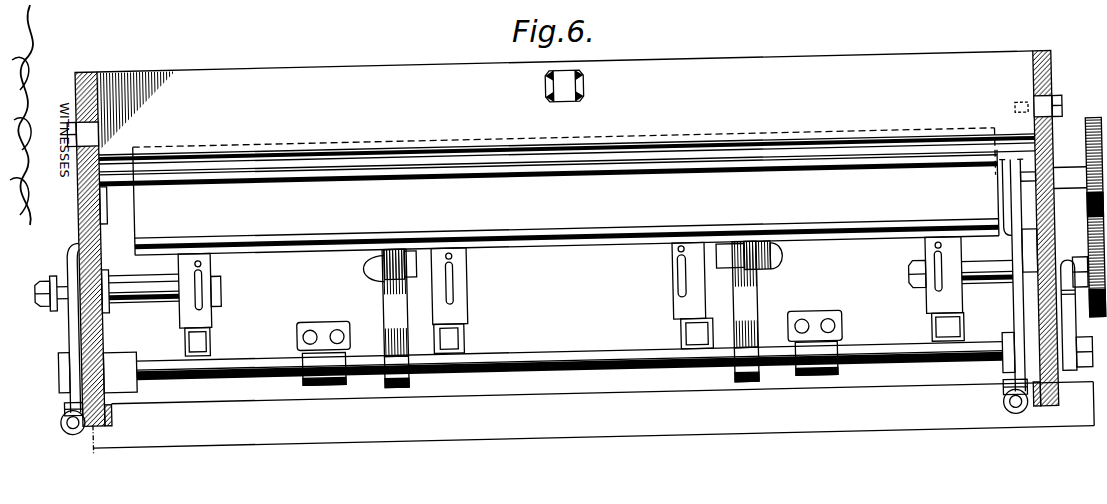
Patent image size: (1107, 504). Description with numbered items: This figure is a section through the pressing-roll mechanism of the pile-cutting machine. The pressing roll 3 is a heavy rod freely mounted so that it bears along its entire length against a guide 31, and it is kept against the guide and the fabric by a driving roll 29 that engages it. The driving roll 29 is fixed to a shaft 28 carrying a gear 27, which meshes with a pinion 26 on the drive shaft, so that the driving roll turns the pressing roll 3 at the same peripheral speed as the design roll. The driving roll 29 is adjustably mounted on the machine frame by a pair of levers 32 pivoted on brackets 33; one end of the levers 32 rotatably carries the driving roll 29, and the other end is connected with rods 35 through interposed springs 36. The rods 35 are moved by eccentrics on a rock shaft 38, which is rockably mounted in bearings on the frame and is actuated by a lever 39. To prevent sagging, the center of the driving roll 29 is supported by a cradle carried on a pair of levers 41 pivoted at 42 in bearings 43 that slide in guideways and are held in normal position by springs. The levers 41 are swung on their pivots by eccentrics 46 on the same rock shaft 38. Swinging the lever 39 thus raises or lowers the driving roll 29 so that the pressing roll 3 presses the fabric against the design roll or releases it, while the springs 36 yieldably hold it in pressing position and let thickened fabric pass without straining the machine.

The pressing roll 3 is at (523, 173).
The pinion 26 is at (1095, 322).
The gear 27 is at (1089, 144).
The shaft 28 is at (1063, 197).
The driving roll 29 is at (549, 192).
The guide 31 is at (566, 123).
The levers 32 is at (66, 331).
The brackets 33 is at (174, 320).
The rods 35 is at (64, 437).
The springs 36 is at (57, 408).
The rock shaft 38 is at (542, 368).
The lever 39 is at (1066, 282).
The levers 41 is at (387, 310).
The pivot 42 is at (354, 270).
The bearings 43 is at (363, 271).
The eccentrics 46 is at (388, 395).